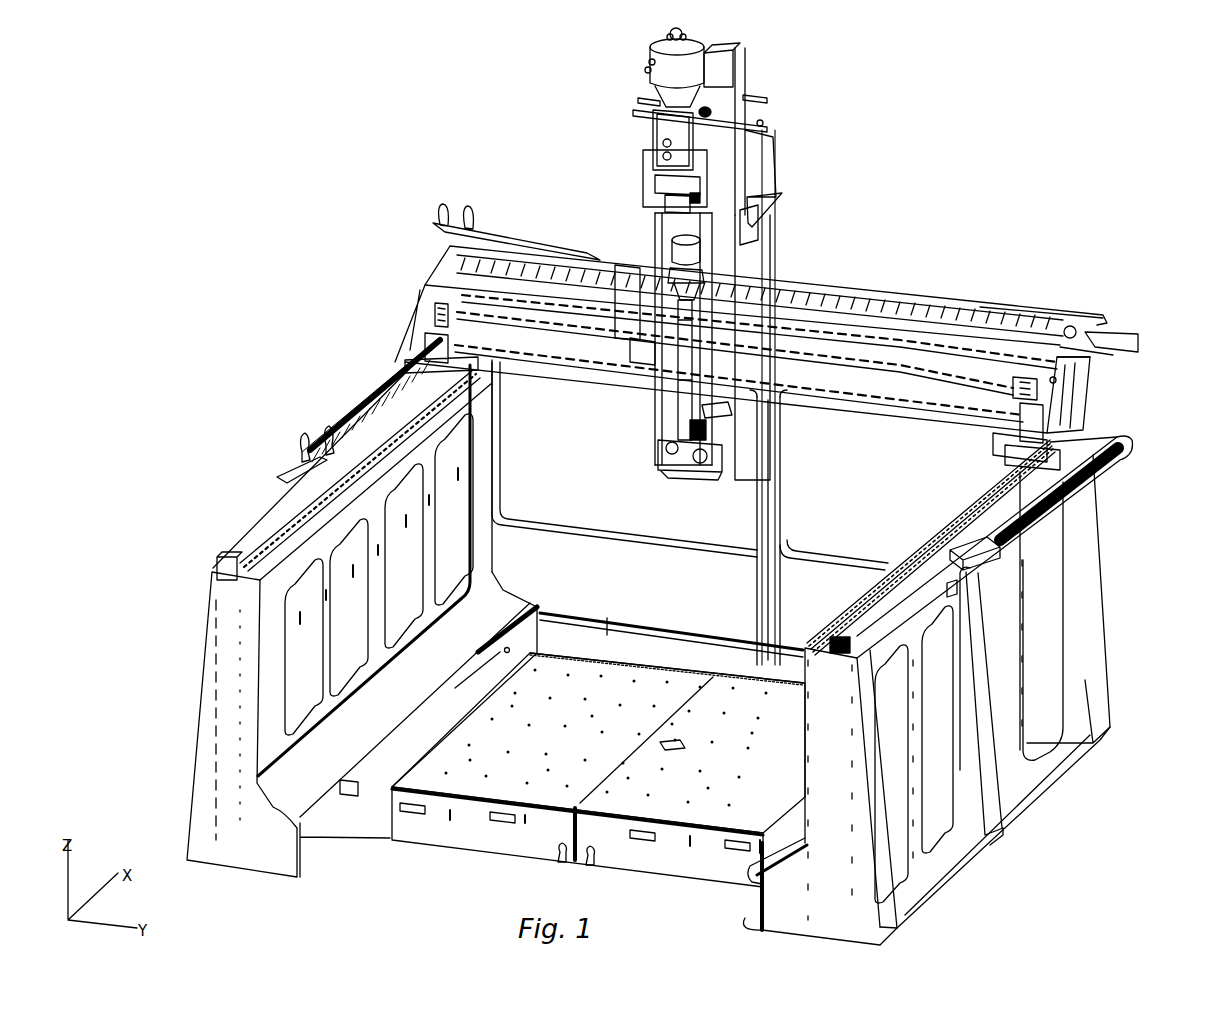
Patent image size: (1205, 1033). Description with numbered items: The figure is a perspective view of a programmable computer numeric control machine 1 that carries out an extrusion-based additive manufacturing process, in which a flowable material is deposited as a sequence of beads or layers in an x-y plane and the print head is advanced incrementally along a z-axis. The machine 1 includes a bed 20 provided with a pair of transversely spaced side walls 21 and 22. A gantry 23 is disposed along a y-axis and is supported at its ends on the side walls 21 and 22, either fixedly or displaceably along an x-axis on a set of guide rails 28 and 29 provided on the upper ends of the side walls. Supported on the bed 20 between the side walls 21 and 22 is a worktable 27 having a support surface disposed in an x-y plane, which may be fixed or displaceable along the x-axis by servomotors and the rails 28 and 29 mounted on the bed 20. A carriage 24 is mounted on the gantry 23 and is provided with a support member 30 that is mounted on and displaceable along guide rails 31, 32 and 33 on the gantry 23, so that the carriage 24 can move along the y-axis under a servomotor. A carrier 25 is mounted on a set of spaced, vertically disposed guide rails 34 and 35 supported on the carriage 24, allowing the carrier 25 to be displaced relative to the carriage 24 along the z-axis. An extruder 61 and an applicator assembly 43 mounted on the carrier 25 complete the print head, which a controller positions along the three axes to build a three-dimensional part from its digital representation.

The CNC machine 1 is at (992, 182).
The bed 20 is at (443, 820).
The side wall 21 is at (212, 666).
The side wall 22 is at (1093, 583).
The gantry 23 is at (948, 290).
The carriage 24 is at (748, 183).
The carrier 25 is at (647, 307).
The worktable 27 is at (692, 670).
The guide rail 28 is at (300, 507).
The guide rail 29 is at (867, 588).
The support member 30 is at (760, 268).
The guide rail 31 is at (912, 313).
The guide rail 32 is at (863, 340).
The guide rail 33 is at (900, 400).
The guide rail 34 is at (653, 390).
The guide rail 35 is at (720, 393).
The applicator assembly 43 is at (662, 457).
The extruder 61 is at (703, 257).